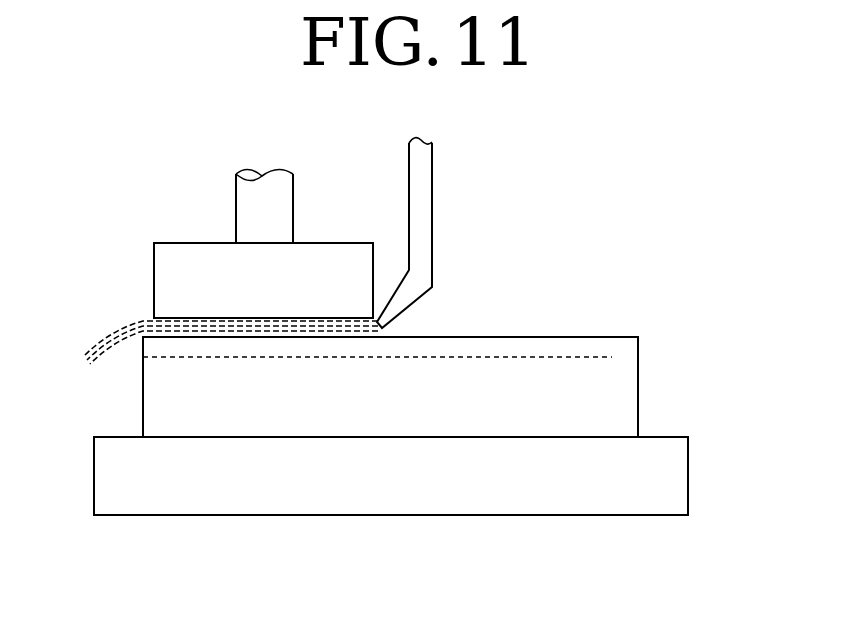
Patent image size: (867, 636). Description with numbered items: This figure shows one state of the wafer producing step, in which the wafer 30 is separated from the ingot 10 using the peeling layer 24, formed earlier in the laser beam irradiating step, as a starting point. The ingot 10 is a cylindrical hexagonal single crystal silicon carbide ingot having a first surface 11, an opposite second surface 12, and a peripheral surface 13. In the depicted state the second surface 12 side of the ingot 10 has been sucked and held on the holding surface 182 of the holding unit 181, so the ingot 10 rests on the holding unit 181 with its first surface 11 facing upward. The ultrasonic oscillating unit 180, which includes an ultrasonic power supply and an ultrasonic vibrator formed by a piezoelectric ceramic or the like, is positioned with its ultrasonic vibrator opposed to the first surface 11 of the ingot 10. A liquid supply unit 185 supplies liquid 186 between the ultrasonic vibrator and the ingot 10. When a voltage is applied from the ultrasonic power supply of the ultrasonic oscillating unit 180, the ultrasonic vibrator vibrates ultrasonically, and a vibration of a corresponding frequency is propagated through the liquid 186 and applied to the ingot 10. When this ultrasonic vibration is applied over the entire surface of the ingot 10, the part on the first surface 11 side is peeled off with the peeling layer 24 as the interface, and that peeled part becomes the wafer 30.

The ingot 10 is at (648, 321).
The first surface 11 is at (574, 337).
The second surface 12 is at (528, 438).
The peripheral surface 13 is at (470, 420).
The peeling layer 24 is at (612, 357).
The wafer 30 is at (492, 347).
The ultrasonic oscillating unit 180 is at (195, 253).
The holding unit 181 is at (677, 477).
The holding surface 182 is at (666, 438).
The liquid supply unit 185 is at (442, 205).
The liquid 186 is at (130, 325).